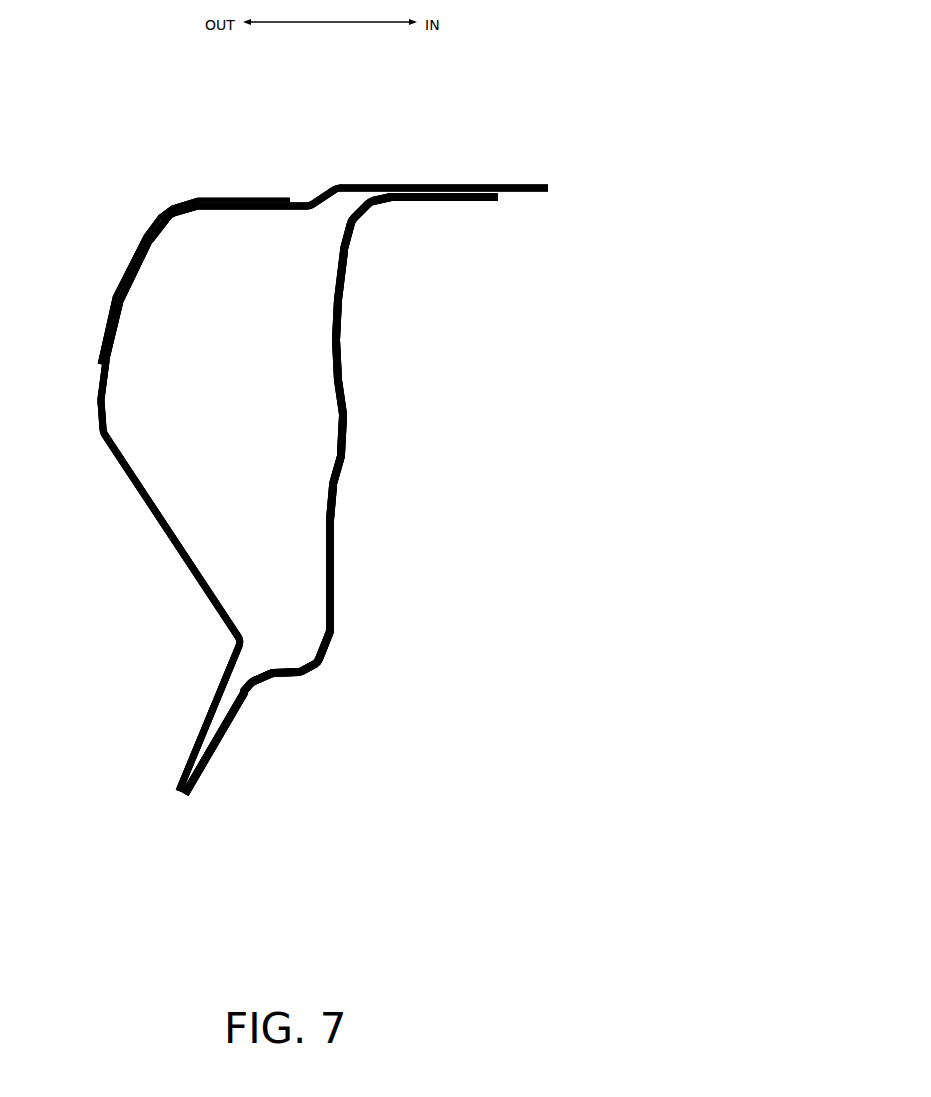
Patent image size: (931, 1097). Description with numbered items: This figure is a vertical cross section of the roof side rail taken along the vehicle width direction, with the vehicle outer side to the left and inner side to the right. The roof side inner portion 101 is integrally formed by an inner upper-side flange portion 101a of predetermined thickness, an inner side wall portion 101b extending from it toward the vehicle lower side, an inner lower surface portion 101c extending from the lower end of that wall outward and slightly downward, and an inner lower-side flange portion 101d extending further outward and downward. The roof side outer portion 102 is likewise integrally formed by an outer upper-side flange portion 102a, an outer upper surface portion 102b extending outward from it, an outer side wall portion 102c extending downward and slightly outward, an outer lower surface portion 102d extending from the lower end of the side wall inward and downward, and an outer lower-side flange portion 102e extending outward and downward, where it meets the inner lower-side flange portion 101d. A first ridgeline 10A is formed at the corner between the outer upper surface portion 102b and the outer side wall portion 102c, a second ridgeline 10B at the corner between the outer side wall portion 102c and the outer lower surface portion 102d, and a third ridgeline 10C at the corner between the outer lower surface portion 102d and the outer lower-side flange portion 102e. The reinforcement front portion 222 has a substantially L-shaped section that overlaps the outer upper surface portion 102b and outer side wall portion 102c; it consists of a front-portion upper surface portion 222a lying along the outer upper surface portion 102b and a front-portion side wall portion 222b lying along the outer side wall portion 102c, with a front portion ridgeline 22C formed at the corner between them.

The roof side inner portion 101 is at (352, 399).
The inner upper-side flange portion 101a is at (438, 206).
The inner side wall portion 101b is at (343, 318).
The inner lower surface portion 101c is at (278, 682).
The inner lower-side flange portion 101d is at (208, 752).
The roof side outer portion 102 is at (521, 185).
The outer upper-side flange portion 102a is at (375, 188).
The outer upper surface portion 102b is at (240, 212).
The outer side wall portion 102c is at (135, 310).
The outer lower surface portion 102d is at (165, 522).
The outer lower-side flange portion 102e is at (205, 730).
The reinforcement front portion 222 is at (273, 196).
The front-portion upper surface portion 222a is at (228, 198).
The front-portion side wall portion 222b is at (108, 328).
The front portion ridgeline 22C is at (147, 220).
The first ridgeline 10A is at (178, 272).
The second ridgeline 10B is at (92, 443).
The third ridgeline 10C is at (250, 647).